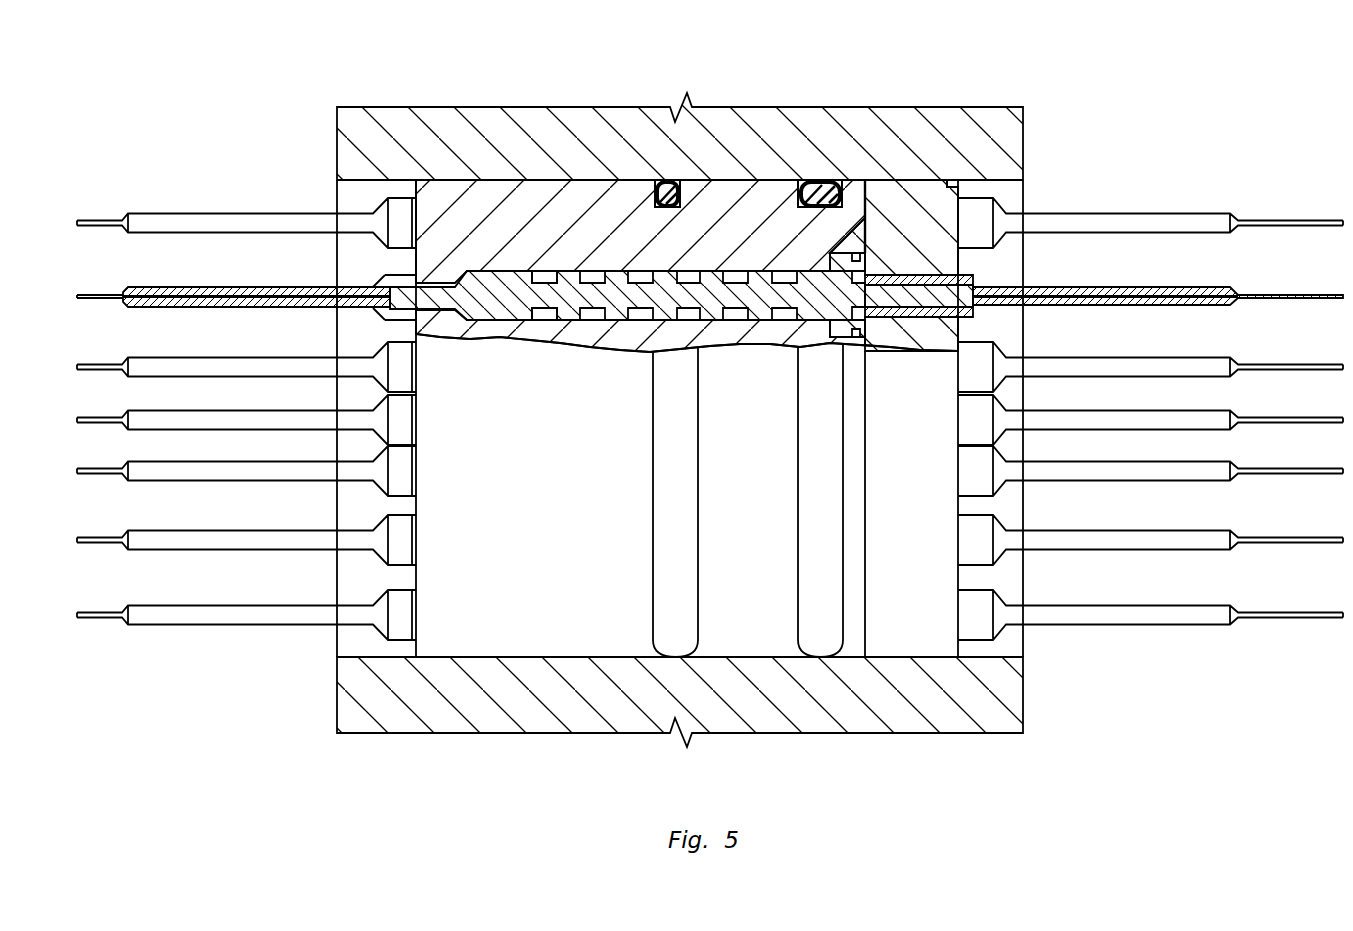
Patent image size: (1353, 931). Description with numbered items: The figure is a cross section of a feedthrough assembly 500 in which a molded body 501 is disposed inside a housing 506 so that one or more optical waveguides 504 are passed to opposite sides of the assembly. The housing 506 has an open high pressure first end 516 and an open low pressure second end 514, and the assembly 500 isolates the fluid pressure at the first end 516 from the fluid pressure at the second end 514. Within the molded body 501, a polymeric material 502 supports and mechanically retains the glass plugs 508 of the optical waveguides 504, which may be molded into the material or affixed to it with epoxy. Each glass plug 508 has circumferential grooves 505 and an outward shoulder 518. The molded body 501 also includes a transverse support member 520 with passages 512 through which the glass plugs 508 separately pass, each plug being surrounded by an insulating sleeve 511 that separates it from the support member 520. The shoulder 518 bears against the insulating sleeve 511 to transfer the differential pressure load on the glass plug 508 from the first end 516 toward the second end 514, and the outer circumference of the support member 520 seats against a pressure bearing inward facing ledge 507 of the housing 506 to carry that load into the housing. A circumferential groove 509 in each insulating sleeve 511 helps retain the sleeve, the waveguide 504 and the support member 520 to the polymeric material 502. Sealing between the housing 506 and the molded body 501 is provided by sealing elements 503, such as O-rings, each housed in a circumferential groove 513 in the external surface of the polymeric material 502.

The feedthrough assembly 500 is at (196, 79).
The molded body 501 is at (522, 598).
The polymeric material 502 is at (465, 223).
The sealing element 503 is at (686, 187).
The optical waveguide 504 is at (113, 321).
The circumferential groove 505 is at (540, 312).
The housing 506 is at (1023, 694).
The pressure bearing inward facing ledge 507 is at (950, 185).
The glass plug 508 is at (490, 311).
The circumferential groove 509 is at (853, 336).
The insulating sleeve 511 is at (988, 283).
The passage 512 is at (930, 280).
The circumferential groove 513 is at (668, 186).
The open low pressure second end 514 is at (1023, 580).
The open high pressure first end 516 is at (337, 577).
The outward shoulder 518 is at (803, 347).
The transverse support member 520 is at (905, 196).